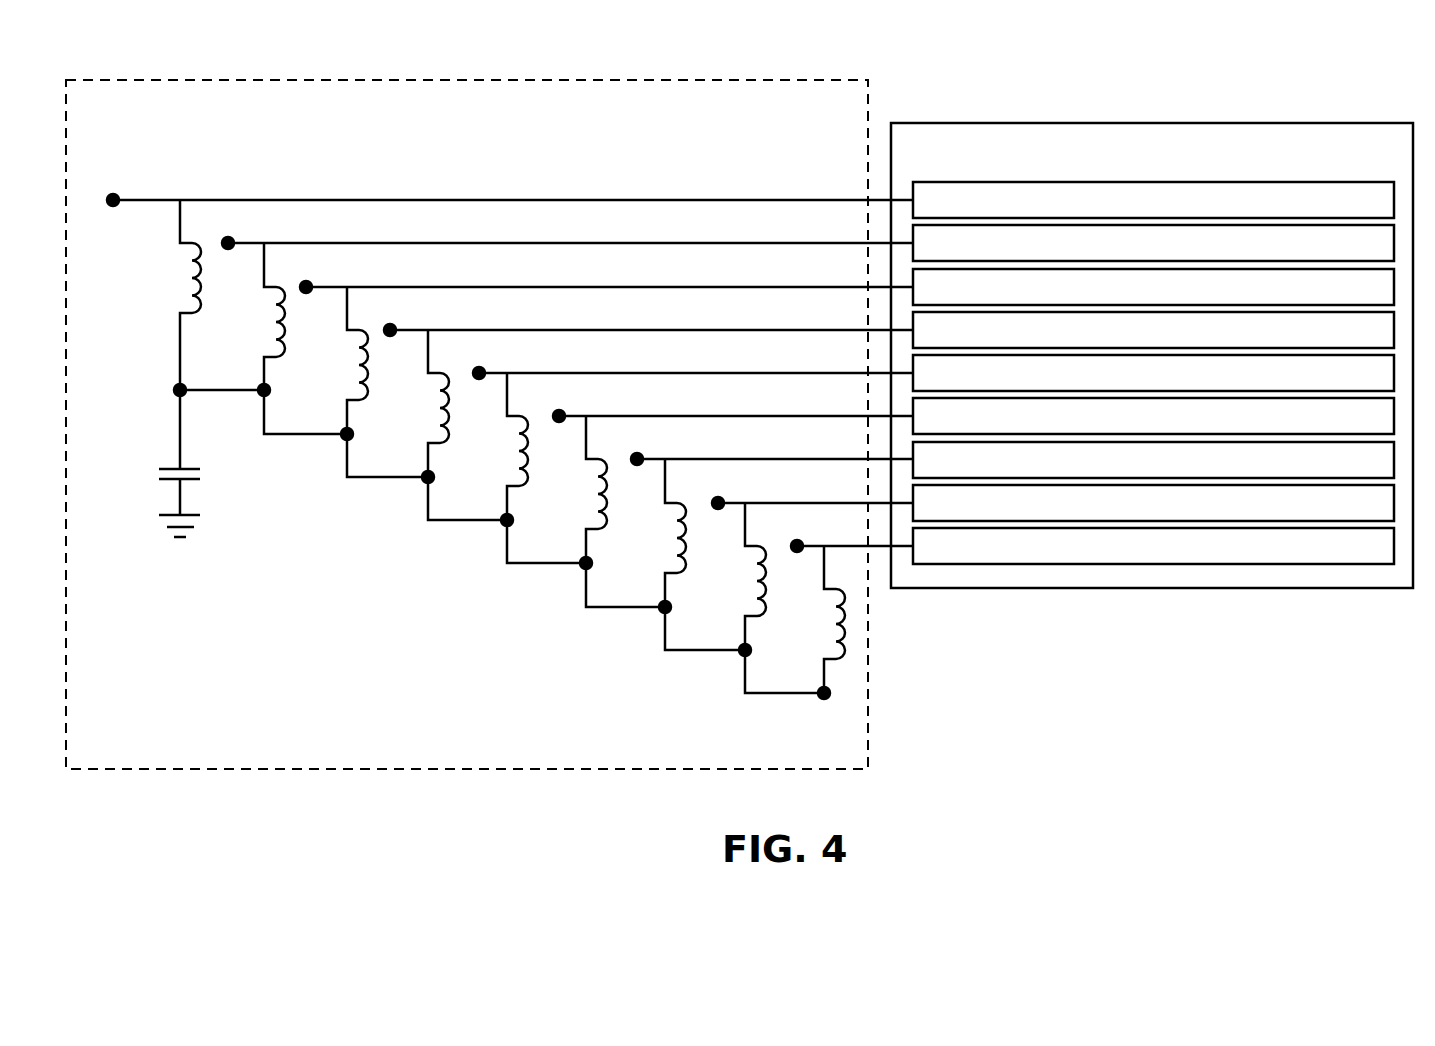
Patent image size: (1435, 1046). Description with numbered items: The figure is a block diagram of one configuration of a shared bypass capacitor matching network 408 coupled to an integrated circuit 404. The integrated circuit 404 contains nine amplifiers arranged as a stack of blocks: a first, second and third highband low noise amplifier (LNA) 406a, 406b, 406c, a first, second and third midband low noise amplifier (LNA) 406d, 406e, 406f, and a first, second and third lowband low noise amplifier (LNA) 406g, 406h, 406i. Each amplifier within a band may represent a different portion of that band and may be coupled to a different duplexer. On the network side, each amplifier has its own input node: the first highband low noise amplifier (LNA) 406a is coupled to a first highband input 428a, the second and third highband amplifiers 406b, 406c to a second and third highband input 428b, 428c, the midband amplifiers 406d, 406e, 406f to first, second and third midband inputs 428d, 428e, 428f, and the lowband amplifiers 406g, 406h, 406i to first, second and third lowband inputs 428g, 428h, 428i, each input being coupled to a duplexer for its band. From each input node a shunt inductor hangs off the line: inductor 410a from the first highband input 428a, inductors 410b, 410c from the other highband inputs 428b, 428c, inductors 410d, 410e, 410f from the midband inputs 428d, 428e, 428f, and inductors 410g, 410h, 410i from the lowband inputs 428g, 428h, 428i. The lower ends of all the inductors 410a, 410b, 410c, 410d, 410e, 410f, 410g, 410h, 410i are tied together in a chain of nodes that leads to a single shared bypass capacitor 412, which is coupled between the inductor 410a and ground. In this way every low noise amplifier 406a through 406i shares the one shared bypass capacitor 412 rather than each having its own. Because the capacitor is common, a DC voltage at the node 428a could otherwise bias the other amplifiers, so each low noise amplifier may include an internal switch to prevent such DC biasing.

The integrated circuit 404 is at (1152, 355).
The shared bypass capacitor matching network 408 is at (467, 424).
The shared bypass capacitor 412 is at (198, 483).
The first highband low noise amplifier (LNA) 406a is at (1153, 200).
The second highband low noise amplifier (LNA) 406b is at (1153, 243).
The third highband low noise amplifier (LNA) 406c is at (1153, 287).
The first midband low noise amplifier (LNA) 406d is at (1153, 330).
The second midband low noise amplifier (LNA) 406e is at (1153, 373).
The third midband low noise amplifier (LNA) 406f is at (1153, 416).
The first lowband low noise amplifier (LNA) 406g is at (1153, 460).
The second lowband low noise amplifier (LNA) 406h is at (1153, 503).
The third lowband low noise amplifier (LNA) 406i is at (1153, 546).
The inductor 410a is at (190, 265).
The inductor 410b is at (274, 309).
The inductor 410c is at (357, 352).
The inductor 410d is at (438, 395).
The inductor 410e is at (517, 438).
The inductor 410f is at (596, 481).
The inductor 410g is at (675, 525).
The inductor 410h is at (755, 568).
The inductor 410i is at (834, 611).
The first highband input 428a is at (113, 194).
The second highband input 428b is at (228, 235).
The third highband input 428c is at (306, 279).
The first midband input 428d is at (390, 322).
The second midband input 428e is at (479, 365).
The third midband input 428f is at (559, 408).
The first lowband input 428g is at (637, 451).
The second lowband input 428h is at (718, 495).
The third lowband input 428i is at (797, 538).